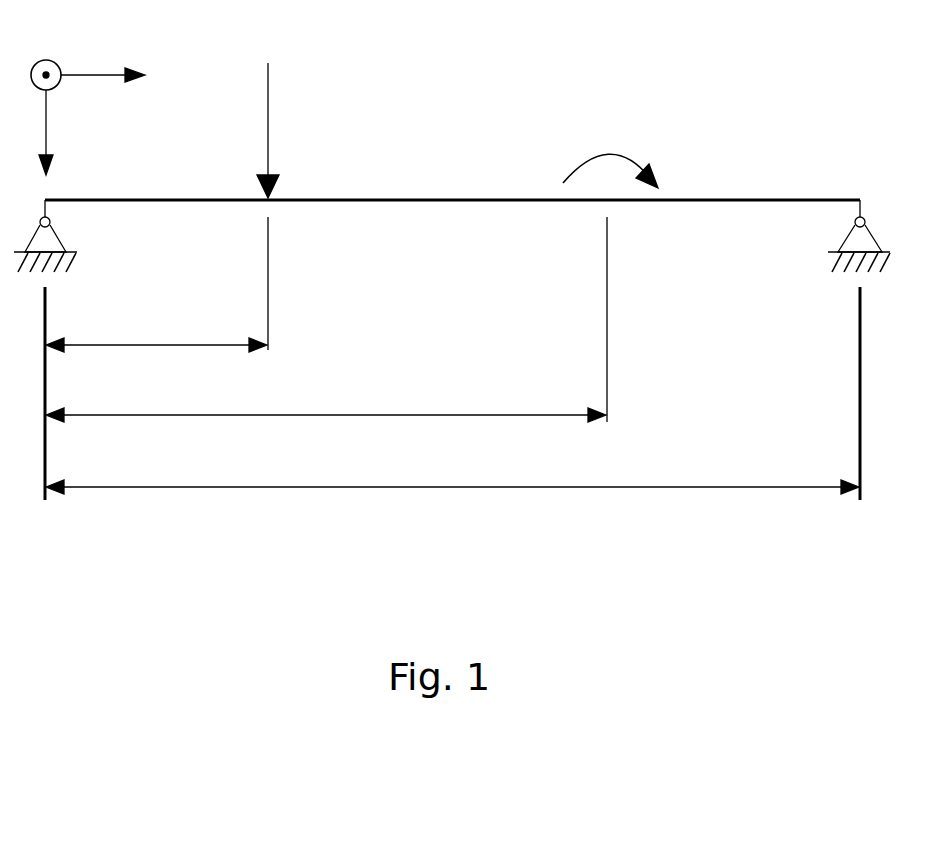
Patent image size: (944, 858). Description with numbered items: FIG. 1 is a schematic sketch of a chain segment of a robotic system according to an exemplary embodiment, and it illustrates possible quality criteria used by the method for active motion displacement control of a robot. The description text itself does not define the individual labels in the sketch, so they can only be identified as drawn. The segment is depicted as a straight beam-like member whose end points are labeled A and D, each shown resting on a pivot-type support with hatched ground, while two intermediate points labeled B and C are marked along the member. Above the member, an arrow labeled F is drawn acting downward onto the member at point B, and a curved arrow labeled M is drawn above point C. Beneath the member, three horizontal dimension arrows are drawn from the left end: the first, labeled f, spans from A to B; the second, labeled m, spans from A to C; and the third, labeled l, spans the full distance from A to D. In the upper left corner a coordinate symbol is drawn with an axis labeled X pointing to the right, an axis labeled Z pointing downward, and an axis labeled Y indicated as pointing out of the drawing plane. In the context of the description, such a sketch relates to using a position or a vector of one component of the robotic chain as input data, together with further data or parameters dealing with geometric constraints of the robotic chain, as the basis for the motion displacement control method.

The left pivot support A is at (51, 236).
The force application point B is at (284, 283).
The moment application point C is at (623, 319).
The right pivot support D is at (869, 236).
The force F is at (277, 130).
The moment M is at (610, 154).
The distance from A to B f is at (156, 331).
The distance from A to C m is at (326, 400).
The beam length l is at (452, 473).
The X axis X is at (103, 61).
The Y axis Y is at (36, 65).
The Z axis Z is at (33, 135).